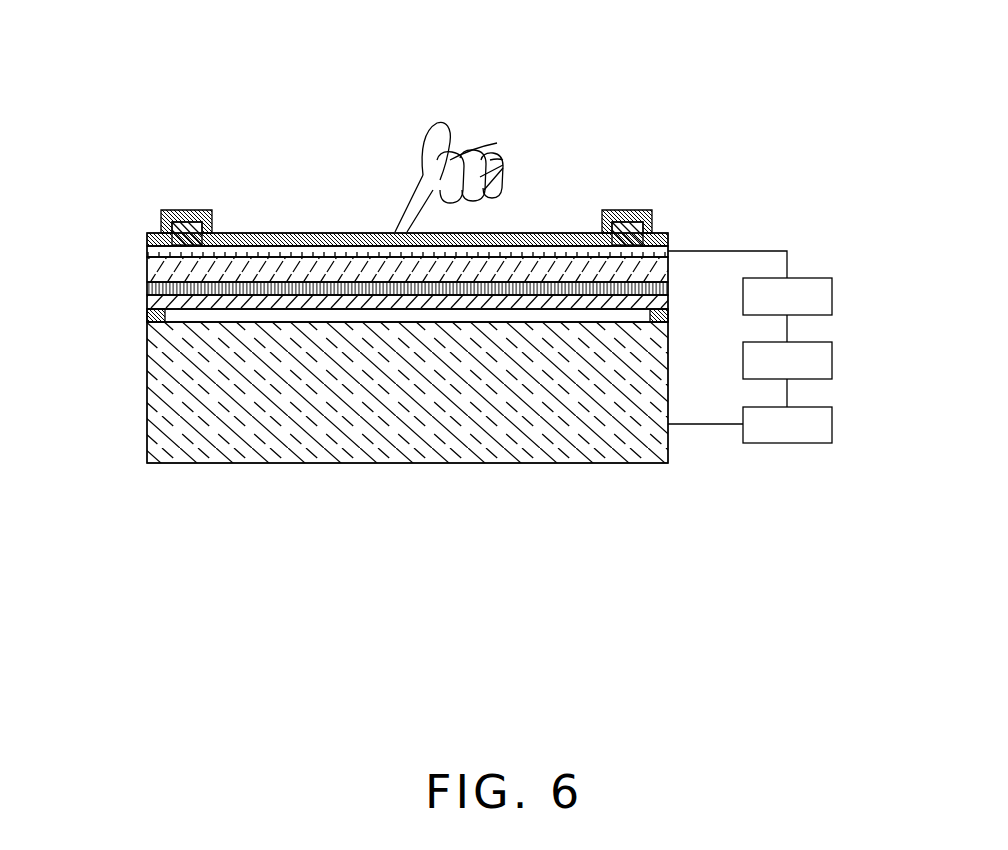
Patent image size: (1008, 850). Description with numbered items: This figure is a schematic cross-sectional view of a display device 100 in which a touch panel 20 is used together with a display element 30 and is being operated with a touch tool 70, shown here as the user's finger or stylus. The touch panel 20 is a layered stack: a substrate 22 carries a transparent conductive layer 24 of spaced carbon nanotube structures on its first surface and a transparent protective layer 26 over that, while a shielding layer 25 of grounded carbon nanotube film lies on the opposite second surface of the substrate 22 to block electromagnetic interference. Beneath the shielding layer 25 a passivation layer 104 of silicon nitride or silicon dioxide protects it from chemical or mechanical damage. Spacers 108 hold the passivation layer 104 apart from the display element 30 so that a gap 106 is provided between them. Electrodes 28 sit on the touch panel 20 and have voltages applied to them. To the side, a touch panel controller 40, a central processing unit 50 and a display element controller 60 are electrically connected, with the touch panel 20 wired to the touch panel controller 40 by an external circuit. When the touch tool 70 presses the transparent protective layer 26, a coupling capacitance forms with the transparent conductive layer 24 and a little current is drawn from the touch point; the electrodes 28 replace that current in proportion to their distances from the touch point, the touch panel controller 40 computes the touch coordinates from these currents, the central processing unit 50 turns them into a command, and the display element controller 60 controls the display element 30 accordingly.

The display device 100 is at (472, 23).
The touch panel 20 is at (67, 213).
The transparent protective layer 26 is at (145, 238).
The transparent conductive layer 24 is at (145, 250).
The substrate 22 is at (145, 272).
The shielding layer 25 is at (145, 292).
The passivation layer 104 is at (145, 302).
The gap 106 is at (628, 316).
The spacers 108 is at (147, 316).
The display element 30 is at (148, 390).
The electrodes 28 is at (635, 213).
The touch tool 70 is at (430, 153).
The touch panel controller 40 is at (832, 295).
The central processing unit 50 is at (832, 360).
The display element controller 60 is at (832, 423).